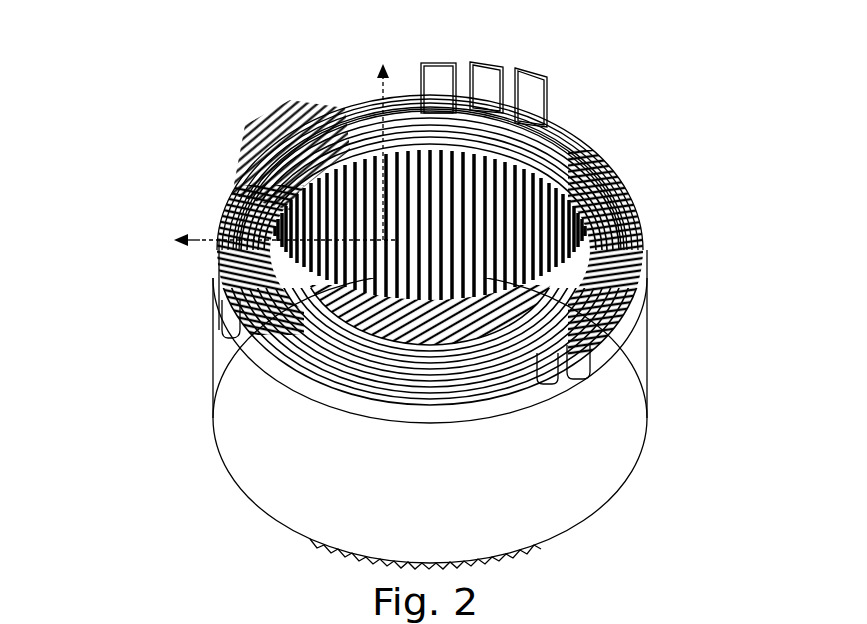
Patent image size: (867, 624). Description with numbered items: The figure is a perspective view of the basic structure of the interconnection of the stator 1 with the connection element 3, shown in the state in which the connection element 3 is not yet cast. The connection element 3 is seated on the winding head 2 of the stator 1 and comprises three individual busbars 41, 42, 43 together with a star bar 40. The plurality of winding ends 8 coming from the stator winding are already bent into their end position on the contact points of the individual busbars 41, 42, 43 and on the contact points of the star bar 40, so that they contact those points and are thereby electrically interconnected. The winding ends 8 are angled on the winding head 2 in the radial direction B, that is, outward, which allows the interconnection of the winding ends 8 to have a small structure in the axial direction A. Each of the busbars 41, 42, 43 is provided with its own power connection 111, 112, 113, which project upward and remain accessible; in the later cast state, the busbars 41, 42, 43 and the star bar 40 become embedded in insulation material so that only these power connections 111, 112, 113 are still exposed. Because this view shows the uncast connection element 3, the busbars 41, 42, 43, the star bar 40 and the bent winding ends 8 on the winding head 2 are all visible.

The stator 1 is at (186, 405).
The winding head 2 is at (348, 377).
The connection element 3 is at (653, 255).
The star bar 40 is at (212, 293).
The busbar 41 is at (561, 147).
The busbar 42 is at (597, 158).
The busbar 43 is at (348, 105).
The winding ends 8 is at (270, 147).
The power connection 111 is at (440, 64).
The power connection 112 is at (485, 70).
The power connection 113 is at (537, 83).
The axial direction A is at (381, 90).
The radial direction B is at (192, 240).